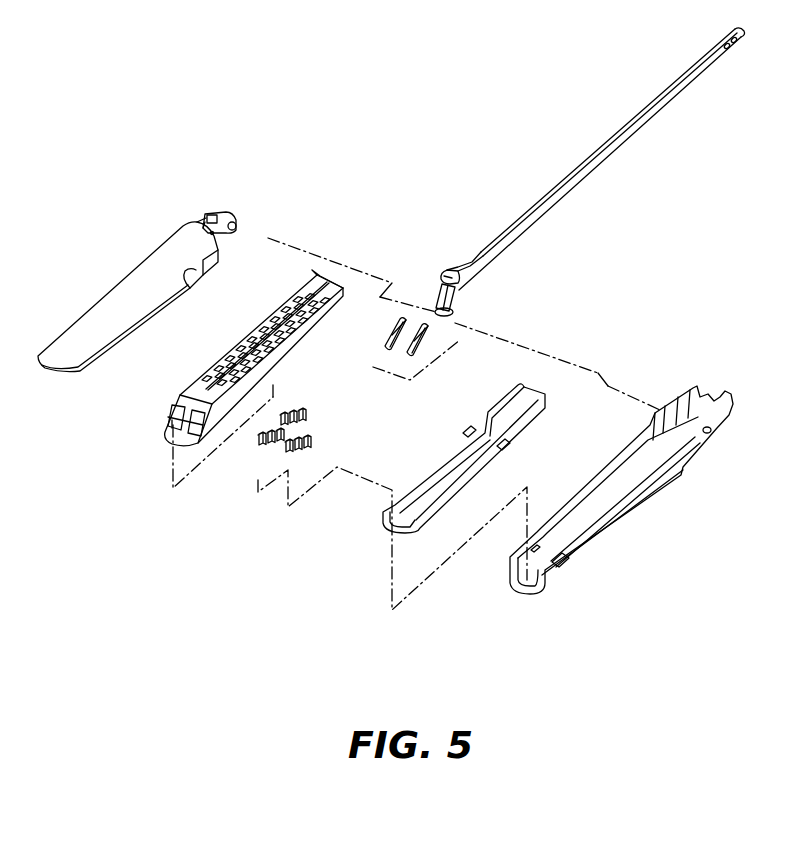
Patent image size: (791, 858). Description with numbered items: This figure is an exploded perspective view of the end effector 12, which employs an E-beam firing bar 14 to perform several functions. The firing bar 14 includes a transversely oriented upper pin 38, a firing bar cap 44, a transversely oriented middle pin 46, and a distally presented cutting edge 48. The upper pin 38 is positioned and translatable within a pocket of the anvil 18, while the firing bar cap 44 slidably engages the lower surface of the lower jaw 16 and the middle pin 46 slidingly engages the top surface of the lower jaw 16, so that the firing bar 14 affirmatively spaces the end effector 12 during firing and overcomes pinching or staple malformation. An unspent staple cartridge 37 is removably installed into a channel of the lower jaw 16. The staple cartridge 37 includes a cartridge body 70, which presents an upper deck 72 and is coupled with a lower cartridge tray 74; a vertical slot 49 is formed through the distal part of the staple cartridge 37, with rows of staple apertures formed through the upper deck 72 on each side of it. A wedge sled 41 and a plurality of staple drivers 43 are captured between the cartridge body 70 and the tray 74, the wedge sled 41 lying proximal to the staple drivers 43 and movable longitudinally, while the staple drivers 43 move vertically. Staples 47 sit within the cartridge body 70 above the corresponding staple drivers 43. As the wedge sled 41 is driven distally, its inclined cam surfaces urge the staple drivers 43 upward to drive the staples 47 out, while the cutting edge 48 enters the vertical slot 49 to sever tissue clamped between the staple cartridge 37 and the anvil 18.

The end effector 12 is at (538, 655).
The firing bar 14 is at (607, 146).
The lower jaw 16 is at (607, 531).
The anvil 18 is at (130, 293).
The staple cartridge 37 is at (144, 419).
The upper pin 38 is at (453, 268).
The wedge sled 41 is at (391, 328).
The staple drivers 43 is at (283, 447).
The firing bar cap 44 is at (452, 311).
The middle pin 46 is at (457, 297).
The staples 47 is at (302, 419).
The cutting edge 48 is at (442, 283).
The vertical slot 49 is at (308, 296).
The cartridge body 70 is at (203, 348).
The upper deck 72 is at (220, 350).
The lower cartridge tray 74 is at (530, 420).